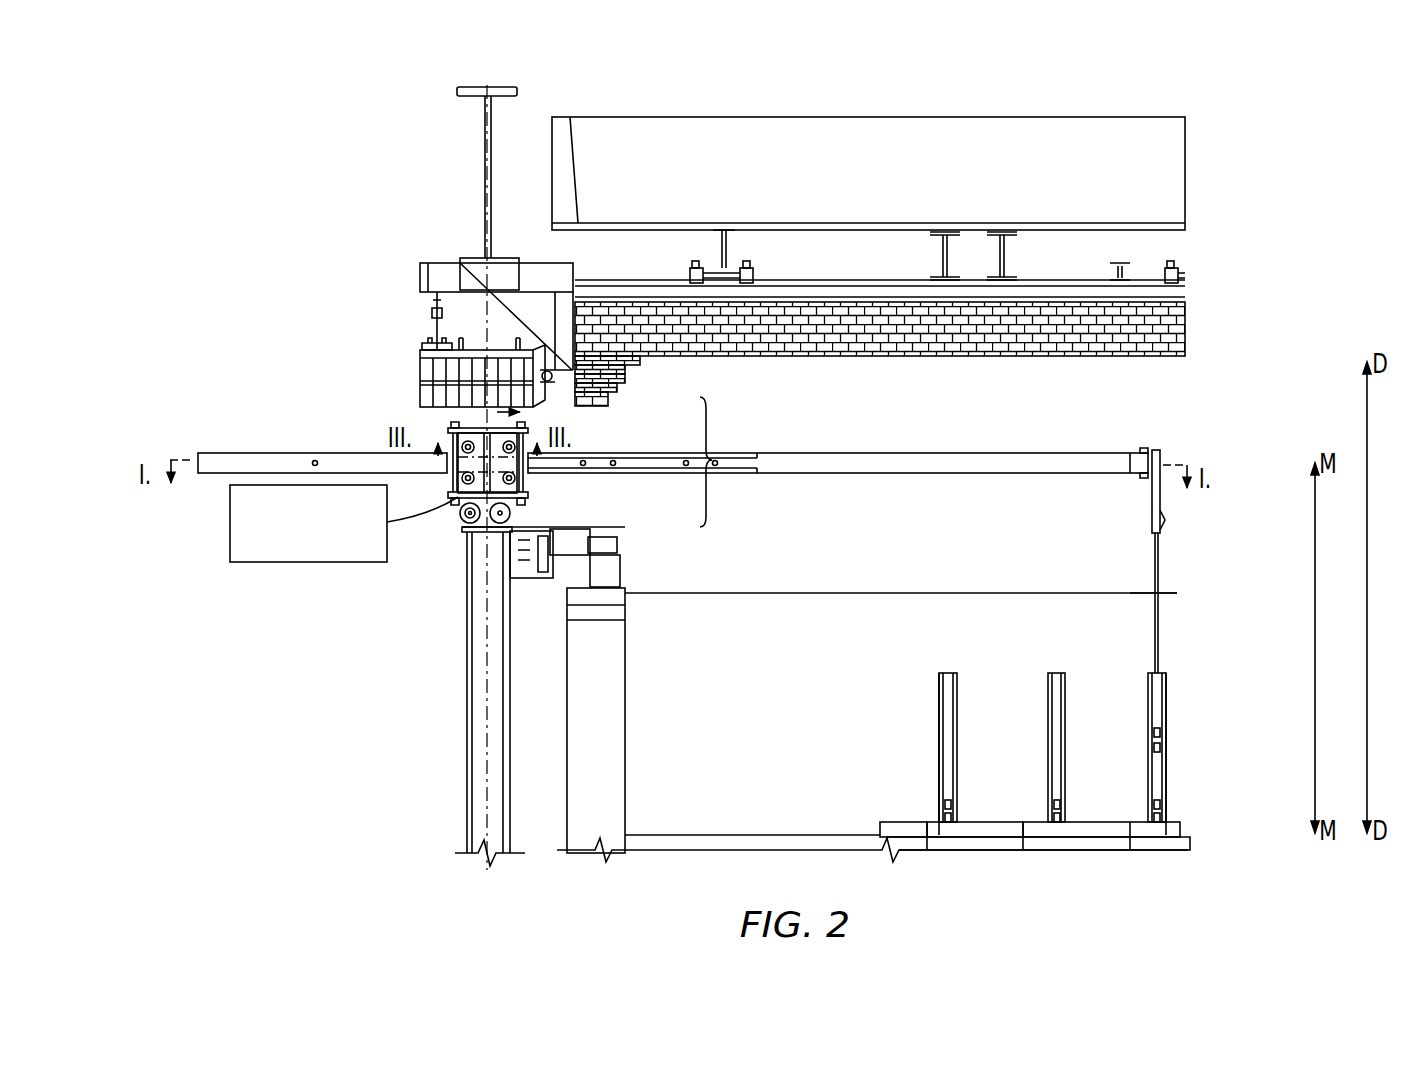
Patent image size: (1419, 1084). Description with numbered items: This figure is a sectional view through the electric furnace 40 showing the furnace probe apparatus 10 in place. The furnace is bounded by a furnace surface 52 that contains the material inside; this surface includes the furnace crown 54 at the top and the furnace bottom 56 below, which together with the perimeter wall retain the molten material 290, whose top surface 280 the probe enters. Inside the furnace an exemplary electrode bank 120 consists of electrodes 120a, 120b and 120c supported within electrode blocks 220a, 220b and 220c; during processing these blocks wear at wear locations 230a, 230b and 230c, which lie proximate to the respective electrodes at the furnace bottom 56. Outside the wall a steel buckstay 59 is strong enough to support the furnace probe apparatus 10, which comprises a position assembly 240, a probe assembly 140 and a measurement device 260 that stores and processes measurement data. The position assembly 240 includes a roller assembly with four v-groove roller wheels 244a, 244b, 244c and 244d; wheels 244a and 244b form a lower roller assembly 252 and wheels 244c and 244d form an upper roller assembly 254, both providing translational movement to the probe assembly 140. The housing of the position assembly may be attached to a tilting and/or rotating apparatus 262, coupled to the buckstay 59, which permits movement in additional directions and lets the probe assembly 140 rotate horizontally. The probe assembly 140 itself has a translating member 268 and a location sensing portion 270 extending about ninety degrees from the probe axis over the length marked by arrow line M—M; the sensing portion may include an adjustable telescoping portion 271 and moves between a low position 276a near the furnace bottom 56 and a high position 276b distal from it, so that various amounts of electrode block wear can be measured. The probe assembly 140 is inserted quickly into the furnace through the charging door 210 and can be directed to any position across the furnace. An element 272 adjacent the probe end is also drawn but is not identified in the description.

The electric furnace 40 is at (1222, 122).
The furnace crown 54 is at (1092, 358).
The upper roller assembly 254 is at (460, 428).
The furnace probe apparatus 10 is at (432, 420).
The position assembly 240 is at (535, 418).
The roller wheel 244a is at (466, 484).
The roller wheel 244b is at (516, 478).
The roller wheel 244c is at (516, 450).
The roller wheel 244d is at (460, 450).
The lower roller assembly 252 is at (462, 482).
The tilting and/or rotating apparatus 262 is at (512, 512).
The buckstay 59 is at (468, 598).
The probe assembly 140 is at (915, 453).
The translating member 268 is at (778, 475).
The charging door 210 is at (726, 462).
The measurement device 260 is at (302, 562).
The furnace surface 52 is at (625, 812).
The top surface of molten material 280 is at (988, 590).
The molten material 290 is at (815, 719).
The electrode bank 120 is at (930, 612).
The electrode 120a is at (952, 673).
The electrode 120b is at (1062, 673).
The electrode 120c is at (1168, 688).
The electrode block 220a is at (905, 822).
The electrode block 220b is at (998, 822).
The electrode block 220c is at (1098, 822).
The wear location 230a is at (928, 838).
The wear location 230b is at (1022, 838).
The wear location 230c is at (1132, 838).
The low position 276a is at (1180, 832).
The high position 276b is at (1160, 815).
The furnace bottom 56 is at (814, 834).
The location sensing portion 270 is at (1160, 648).
The adjustable telescoping portion 271 is at (1153, 620).
The end bracket 272 is at (1162, 510).